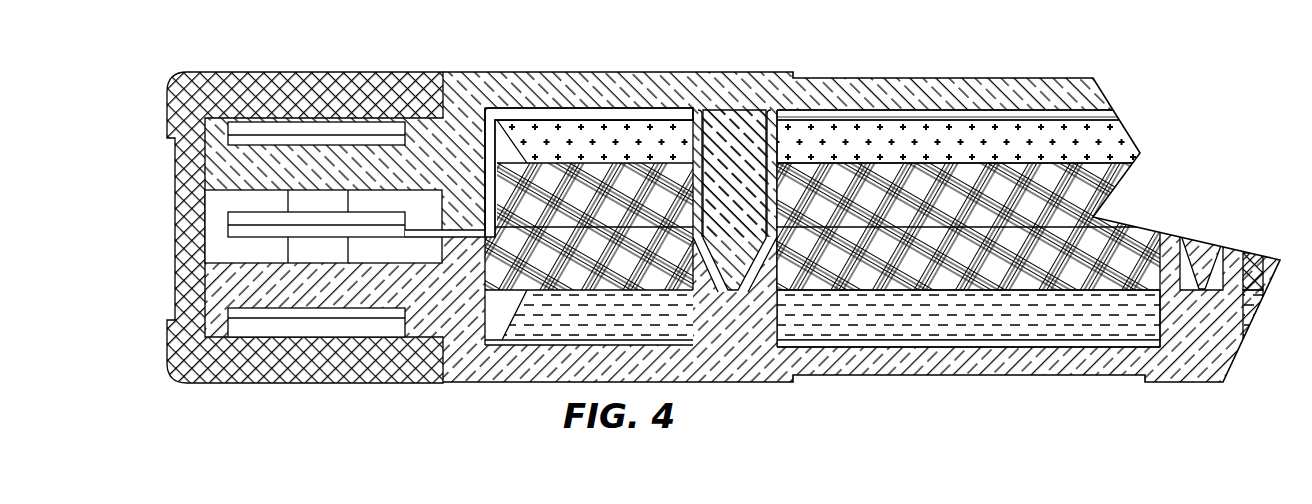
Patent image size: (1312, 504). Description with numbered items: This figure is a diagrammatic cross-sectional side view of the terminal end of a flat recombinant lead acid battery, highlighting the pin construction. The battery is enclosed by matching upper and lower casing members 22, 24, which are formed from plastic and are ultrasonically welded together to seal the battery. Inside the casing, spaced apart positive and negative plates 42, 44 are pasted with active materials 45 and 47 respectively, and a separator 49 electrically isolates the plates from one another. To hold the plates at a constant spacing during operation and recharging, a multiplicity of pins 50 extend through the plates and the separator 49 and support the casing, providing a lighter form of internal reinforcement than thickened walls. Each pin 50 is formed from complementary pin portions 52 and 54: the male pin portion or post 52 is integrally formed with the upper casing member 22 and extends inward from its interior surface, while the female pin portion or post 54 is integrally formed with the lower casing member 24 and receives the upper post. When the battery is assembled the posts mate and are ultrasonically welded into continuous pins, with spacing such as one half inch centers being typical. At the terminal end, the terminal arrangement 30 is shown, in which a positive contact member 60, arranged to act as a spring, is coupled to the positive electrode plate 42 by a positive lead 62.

The upper casing member 22 is at (1043, 90).
The lower casing member 24 is at (1053, 367).
The terminal arrangement 30 is at (332, 188).
The positive plate 42 is at (530, 113).
The negative plate 44 is at (888, 343).
The active material 45 is at (597, 130).
The active material 47 is at (965, 327).
The separator 49 is at (925, 167).
The pin 50 is at (733, 135).
The male pin portion 52 is at (780, 120).
The female pin portion 54 is at (740, 327).
The positive contact member 60 is at (367, 217).
The positive lead 62 is at (423, 233).